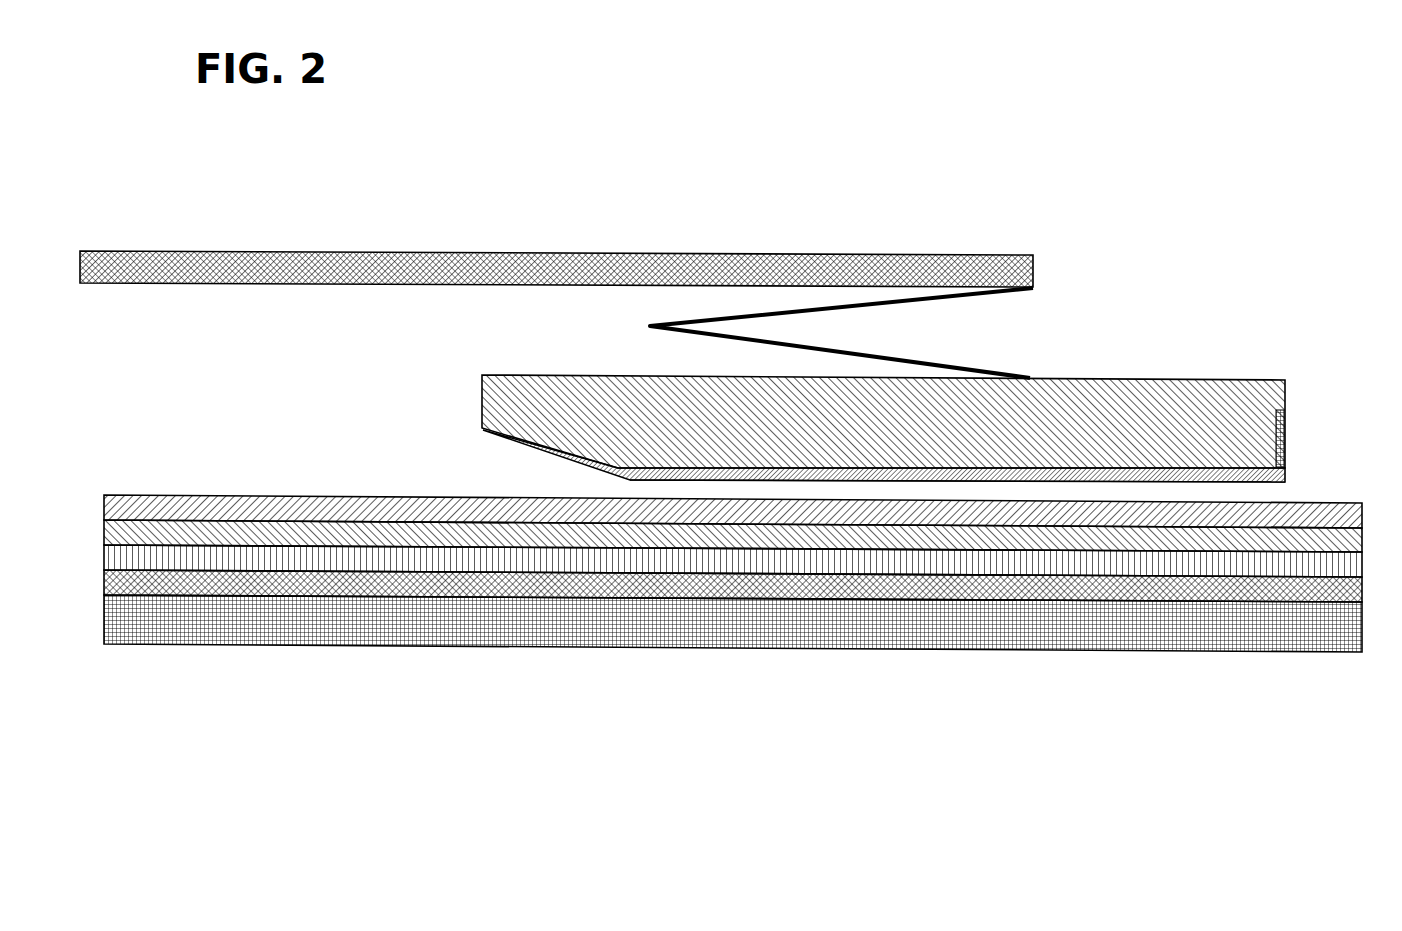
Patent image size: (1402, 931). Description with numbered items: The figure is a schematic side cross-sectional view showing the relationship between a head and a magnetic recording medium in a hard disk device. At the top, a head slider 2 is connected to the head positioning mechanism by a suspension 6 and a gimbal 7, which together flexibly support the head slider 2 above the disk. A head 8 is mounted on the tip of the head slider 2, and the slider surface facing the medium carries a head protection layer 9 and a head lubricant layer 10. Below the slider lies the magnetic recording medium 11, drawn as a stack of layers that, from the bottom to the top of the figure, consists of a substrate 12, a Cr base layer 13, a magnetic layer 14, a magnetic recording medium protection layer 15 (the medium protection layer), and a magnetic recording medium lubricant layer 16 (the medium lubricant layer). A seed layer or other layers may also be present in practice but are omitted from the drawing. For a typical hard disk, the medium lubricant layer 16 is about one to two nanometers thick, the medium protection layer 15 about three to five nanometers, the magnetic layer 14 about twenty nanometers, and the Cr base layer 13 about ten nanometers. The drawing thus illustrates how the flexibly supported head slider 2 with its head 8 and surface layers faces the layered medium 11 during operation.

The head slider 2 is at (1052, 413).
The suspension 6 is at (483, 253).
The gimbal 7 is at (775, 311).
The head 8 is at (1280, 410).
The head protection layer 9 is at (1108, 467).
The head lubricant layer 10 is at (1160, 467).
The magnetic recording medium 11 is at (733, 683).
The substrate 12 is at (387, 795).
The Cr base layer 13 is at (863, 597).
The magnetic layer 14 is at (755, 550).
The magnetic recording medium protection layer 15 is at (673, 533).
The magnetic recording medium lubricant layer 16 is at (597, 513).